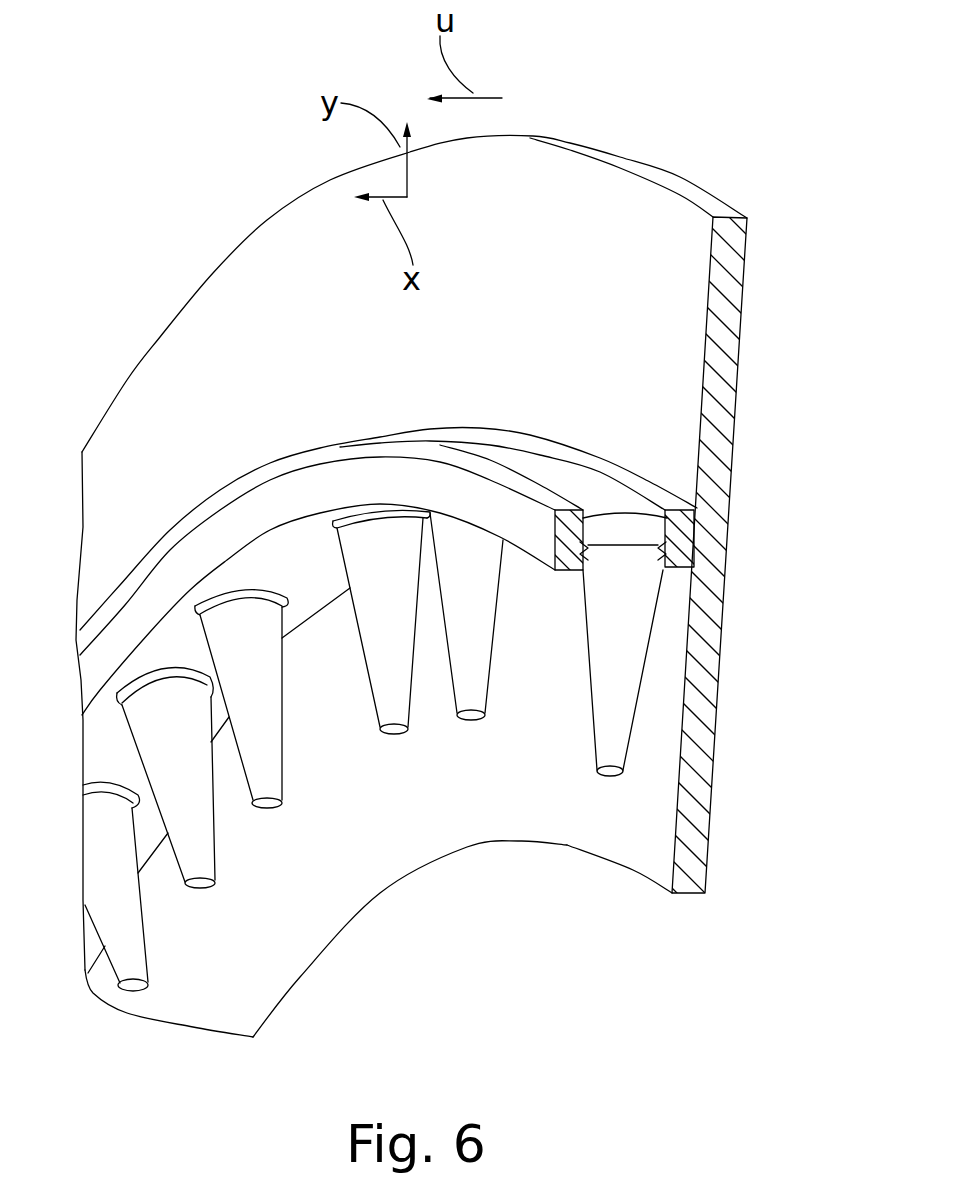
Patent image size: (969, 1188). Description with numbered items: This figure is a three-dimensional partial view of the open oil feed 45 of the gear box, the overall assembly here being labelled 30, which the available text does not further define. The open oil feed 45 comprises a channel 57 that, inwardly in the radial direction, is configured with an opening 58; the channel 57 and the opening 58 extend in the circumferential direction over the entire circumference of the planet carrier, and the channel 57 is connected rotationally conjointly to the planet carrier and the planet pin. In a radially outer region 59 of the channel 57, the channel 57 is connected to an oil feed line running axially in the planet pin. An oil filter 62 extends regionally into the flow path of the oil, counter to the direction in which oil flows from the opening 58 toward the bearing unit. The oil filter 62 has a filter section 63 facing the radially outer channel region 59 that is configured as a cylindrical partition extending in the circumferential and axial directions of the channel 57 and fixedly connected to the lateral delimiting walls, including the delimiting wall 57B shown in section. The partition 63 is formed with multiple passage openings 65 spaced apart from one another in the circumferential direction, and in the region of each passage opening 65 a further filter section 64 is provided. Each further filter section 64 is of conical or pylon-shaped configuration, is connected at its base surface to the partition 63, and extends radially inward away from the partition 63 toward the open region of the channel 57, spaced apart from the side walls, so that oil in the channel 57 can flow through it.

The shroud assembly 30 is at (98, 218).
The open oil feed 45 is at (386, 868).
The channel 57 is at (522, 824).
The delimiting wall 57B is at (710, 630).
The opening 58 is at (603, 813).
The radially outer region of the channel 59 is at (595, 228).
The oil filter 62 is at (381, 416).
The filter section (partition) 63 is at (642, 456).
The further filter section 64 is at (578, 682).
The passage openings 65 is at (599, 528).